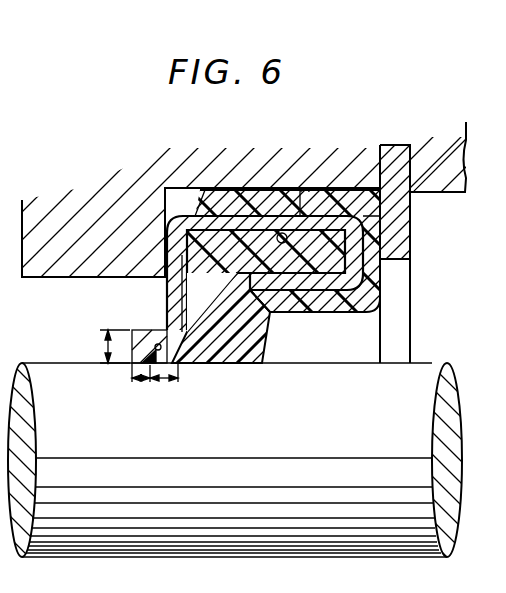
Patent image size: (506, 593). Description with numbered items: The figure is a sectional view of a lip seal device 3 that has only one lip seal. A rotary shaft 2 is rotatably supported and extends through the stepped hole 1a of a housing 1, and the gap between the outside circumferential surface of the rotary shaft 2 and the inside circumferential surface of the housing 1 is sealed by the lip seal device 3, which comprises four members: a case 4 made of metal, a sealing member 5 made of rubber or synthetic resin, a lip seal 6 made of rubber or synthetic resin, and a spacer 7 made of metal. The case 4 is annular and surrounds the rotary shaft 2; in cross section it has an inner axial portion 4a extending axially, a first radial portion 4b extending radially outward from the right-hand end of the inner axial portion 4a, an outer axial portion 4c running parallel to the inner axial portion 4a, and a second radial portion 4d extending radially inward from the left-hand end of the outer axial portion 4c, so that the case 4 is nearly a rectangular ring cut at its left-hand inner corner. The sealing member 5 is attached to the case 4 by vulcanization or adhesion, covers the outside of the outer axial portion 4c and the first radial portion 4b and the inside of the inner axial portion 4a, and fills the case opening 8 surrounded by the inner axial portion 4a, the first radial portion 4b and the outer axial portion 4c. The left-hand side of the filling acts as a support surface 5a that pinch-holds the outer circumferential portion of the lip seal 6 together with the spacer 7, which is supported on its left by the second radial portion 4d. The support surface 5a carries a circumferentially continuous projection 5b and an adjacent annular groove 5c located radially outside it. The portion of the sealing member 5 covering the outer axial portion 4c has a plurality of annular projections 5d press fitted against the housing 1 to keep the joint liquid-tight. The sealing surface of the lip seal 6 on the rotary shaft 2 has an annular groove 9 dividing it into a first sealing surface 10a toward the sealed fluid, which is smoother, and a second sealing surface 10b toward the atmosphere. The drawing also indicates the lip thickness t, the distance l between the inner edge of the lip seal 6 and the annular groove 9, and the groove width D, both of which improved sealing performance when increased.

The housing 1 is at (426, 198).
The stepped hole 1a is at (446, 196).
The rotary shaft 2 is at (428, 360).
The lip seal device 3 is at (384, 287).
The case 4 is at (293, 216).
The inner axial portion 4a is at (300, 288).
The first radial portion 4b is at (365, 246).
The outer axial portion 4c is at (308, 216).
The second radial portion 4d is at (172, 276).
The sealing member 5 is at (208, 198).
The support surface 5a is at (262, 300).
The projection 5b is at (228, 205).
The annular groove 5c is at (246, 255).
The annular projections 5d is at (330, 228).
The lip seal 6 is at (243, 346).
The spacer 7 is at (214, 268).
The case opening 8 is at (281, 232).
The annular groove 9 is at (153, 345).
The first sealing surface 10a is at (133, 364).
The second sealing surface 10b is at (192, 364).
The thickness t is at (104, 345).
The distance l is at (141, 385).
The width D is at (164, 384).